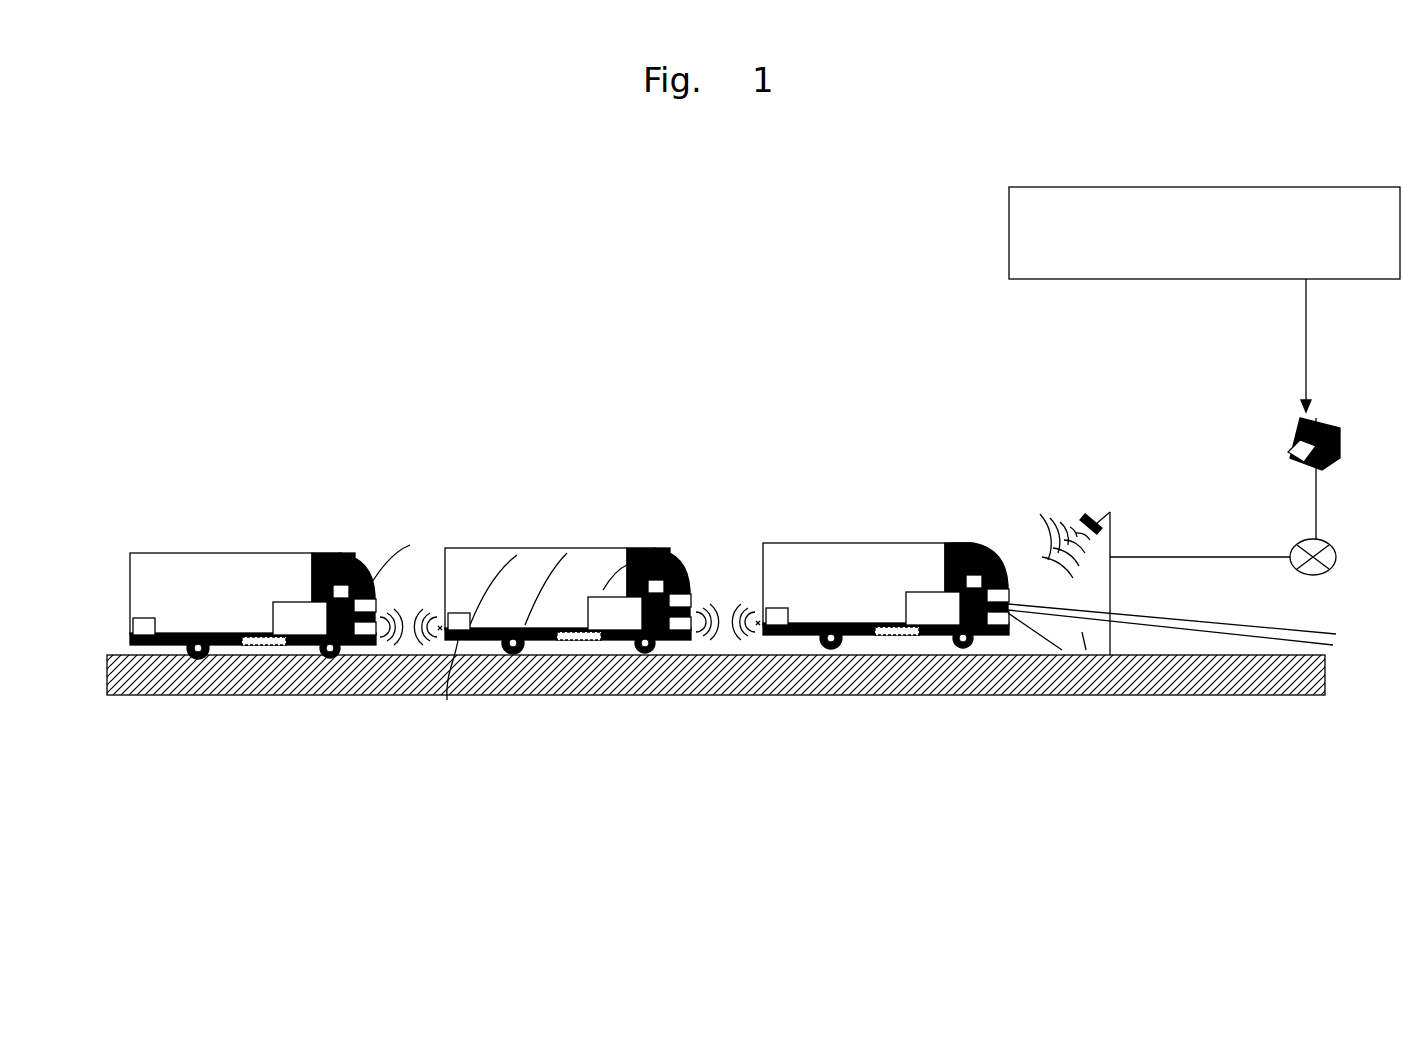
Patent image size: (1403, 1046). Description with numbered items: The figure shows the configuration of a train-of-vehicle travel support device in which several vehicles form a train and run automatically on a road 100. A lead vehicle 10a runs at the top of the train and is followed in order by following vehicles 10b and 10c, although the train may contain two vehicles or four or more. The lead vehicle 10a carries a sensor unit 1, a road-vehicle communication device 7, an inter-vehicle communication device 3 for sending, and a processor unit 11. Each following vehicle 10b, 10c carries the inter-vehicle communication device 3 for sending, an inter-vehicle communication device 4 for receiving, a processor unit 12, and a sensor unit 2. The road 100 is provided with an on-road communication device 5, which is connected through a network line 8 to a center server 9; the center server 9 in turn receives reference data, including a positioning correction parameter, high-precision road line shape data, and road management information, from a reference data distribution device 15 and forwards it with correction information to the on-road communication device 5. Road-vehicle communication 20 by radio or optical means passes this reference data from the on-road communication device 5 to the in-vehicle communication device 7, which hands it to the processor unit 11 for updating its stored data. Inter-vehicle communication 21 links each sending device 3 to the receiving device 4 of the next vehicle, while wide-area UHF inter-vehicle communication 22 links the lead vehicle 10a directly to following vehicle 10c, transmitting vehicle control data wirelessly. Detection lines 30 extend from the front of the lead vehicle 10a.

The sensor unit 1 is at (995, 640).
The sensor unit 2 is at (342, 553).
The inter-vehicle communication device for sending 3 is at (135, 650).
The inter-vehicle communication device for receiving 4 is at (368, 640).
The on-road communication device 5 is at (1094, 510).
The road-vehicle communication device 7 is at (965, 556).
The network line 8 is at (1292, 551).
The center server 9 is at (1297, 435).
The lead vehicle 10a is at (820, 562).
The following vehicle 10b is at (550, 562).
The following vehicle 10c is at (215, 578).
The processor unit 11 is at (930, 612).
The processor unit 12 is at (303, 620).
The reference data distribution device 15 is at (1009, 240).
The road-vehicle communication 20 is at (1025, 558).
The inter-vehicle communication 21 is at (390, 552).
The inter-vehicle communication 22 is at (535, 650).
The detection lines 30 is at (1082, 634).
The road 100 is at (175, 676).